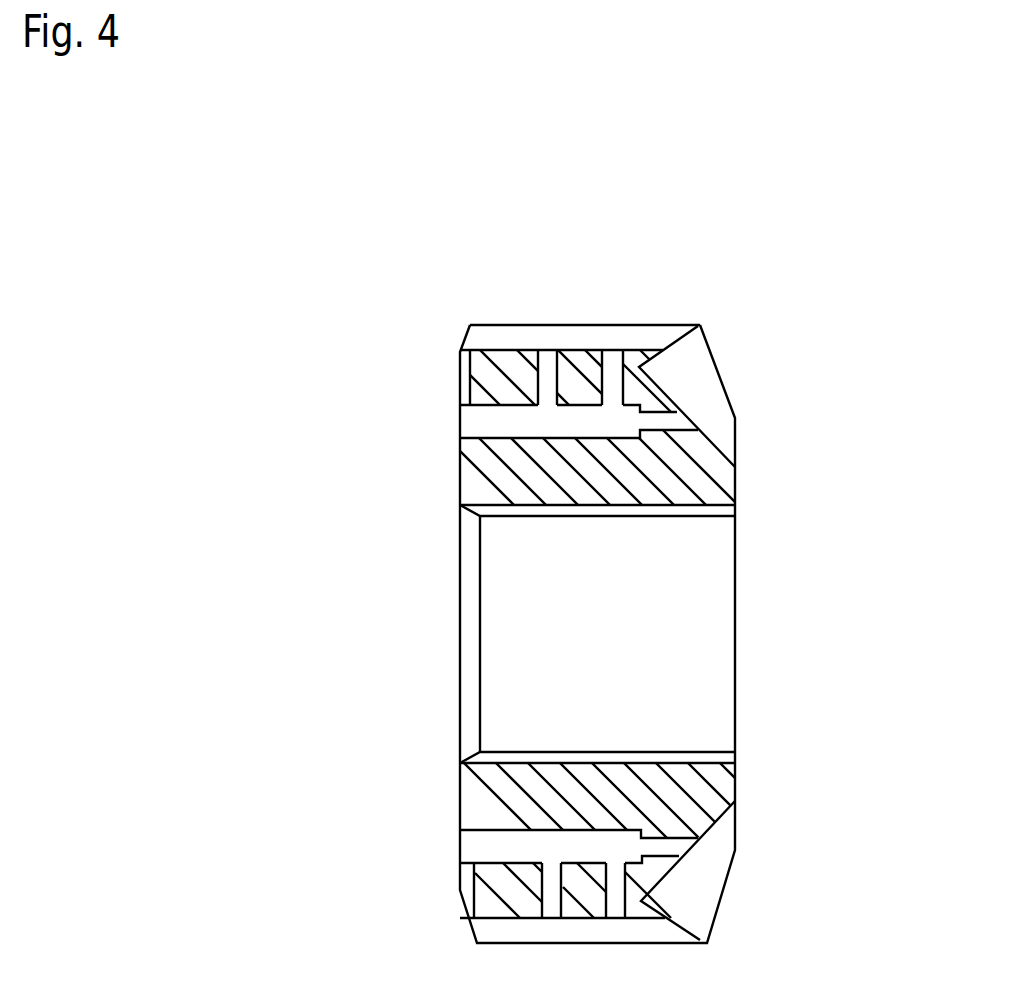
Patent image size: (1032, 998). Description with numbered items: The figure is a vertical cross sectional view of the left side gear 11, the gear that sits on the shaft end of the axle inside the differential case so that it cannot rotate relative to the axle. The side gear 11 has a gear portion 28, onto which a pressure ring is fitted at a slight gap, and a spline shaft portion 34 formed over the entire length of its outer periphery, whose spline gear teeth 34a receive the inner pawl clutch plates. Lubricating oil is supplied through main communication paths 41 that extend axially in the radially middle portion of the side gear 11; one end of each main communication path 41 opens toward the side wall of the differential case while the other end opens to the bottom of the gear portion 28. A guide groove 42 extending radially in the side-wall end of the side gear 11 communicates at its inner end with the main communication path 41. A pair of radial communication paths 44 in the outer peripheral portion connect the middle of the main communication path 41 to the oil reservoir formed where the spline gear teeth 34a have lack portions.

The side gear 11 is at (793, 335).
The gear portion 28 is at (736, 408).
The spline shaft portion 34 is at (653, 324).
The spline gear teeth 34a is at (503, 323).
The main communication path 41 is at (516, 406).
The guide groove 42 is at (468, 383).
The radial communication path 44 is at (553, 358).